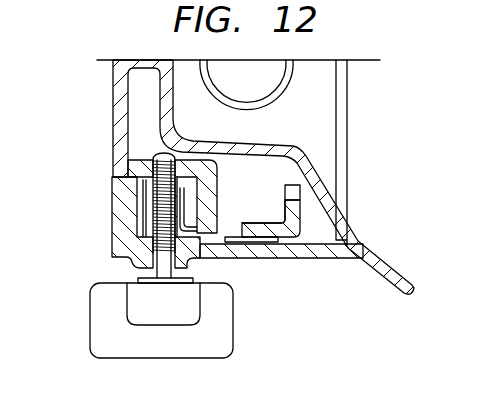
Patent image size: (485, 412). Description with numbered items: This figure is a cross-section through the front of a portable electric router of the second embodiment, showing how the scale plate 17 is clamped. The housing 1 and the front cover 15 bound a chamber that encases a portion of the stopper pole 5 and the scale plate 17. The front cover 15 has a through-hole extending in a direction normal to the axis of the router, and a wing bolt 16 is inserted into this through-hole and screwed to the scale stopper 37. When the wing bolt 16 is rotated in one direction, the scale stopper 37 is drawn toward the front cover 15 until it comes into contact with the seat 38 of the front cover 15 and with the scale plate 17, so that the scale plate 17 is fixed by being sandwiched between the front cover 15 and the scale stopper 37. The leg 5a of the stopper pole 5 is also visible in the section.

The housing 1 is at (113, 78).
The stopper pole 5 is at (298, 227).
The bracket leg 5a is at (258, 240).
The front cover 15 is at (112, 222).
The wing bolt 16 is at (92, 315).
The scale plate 17 is at (222, 250).
The scale stopper 37 is at (157, 160).
The seat 38 is at (143, 196).